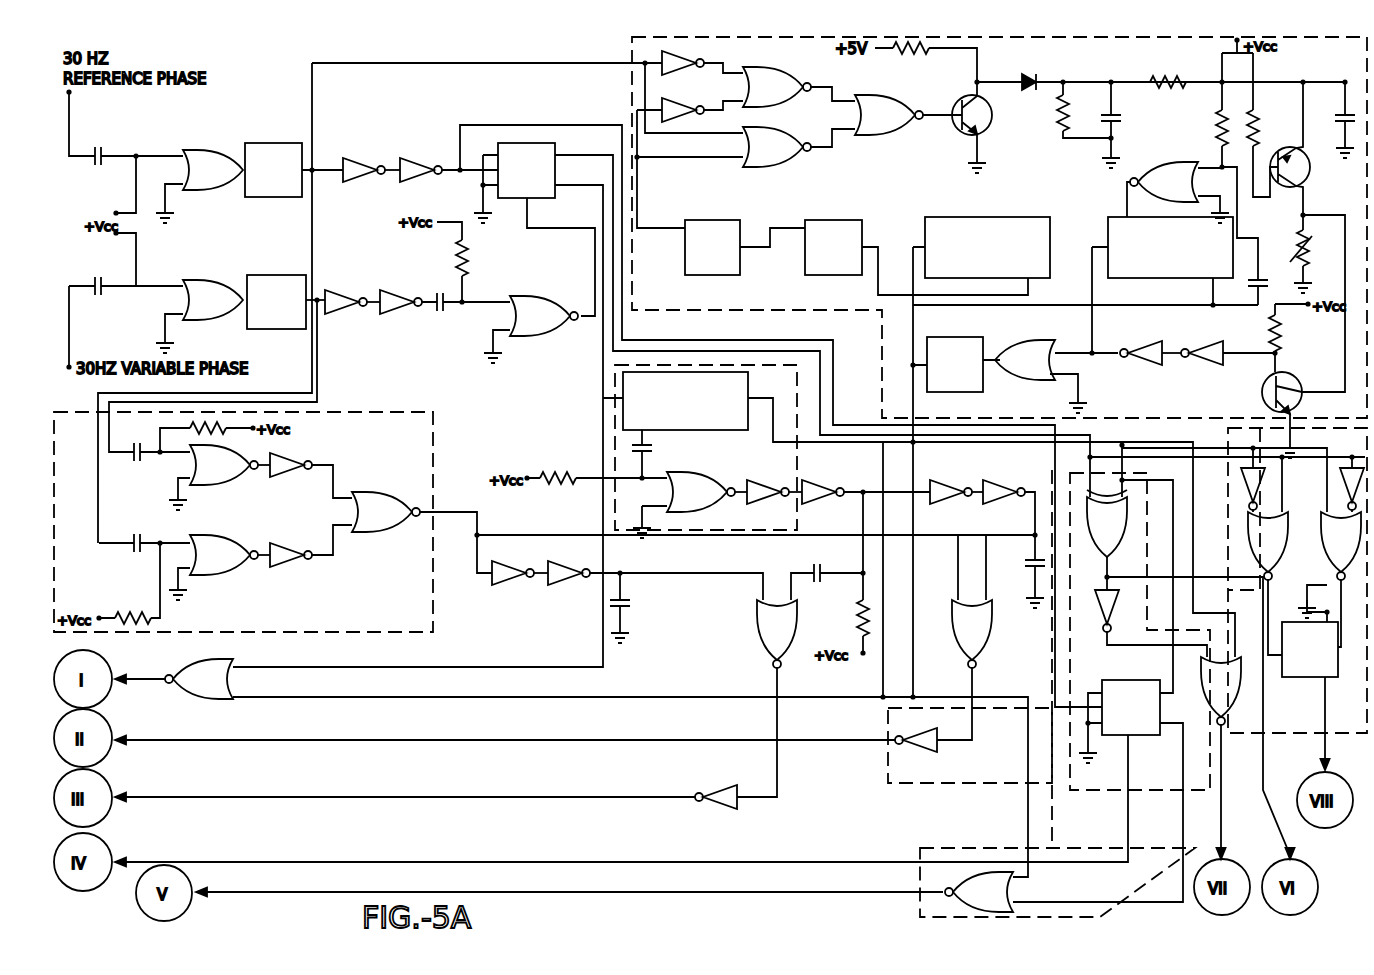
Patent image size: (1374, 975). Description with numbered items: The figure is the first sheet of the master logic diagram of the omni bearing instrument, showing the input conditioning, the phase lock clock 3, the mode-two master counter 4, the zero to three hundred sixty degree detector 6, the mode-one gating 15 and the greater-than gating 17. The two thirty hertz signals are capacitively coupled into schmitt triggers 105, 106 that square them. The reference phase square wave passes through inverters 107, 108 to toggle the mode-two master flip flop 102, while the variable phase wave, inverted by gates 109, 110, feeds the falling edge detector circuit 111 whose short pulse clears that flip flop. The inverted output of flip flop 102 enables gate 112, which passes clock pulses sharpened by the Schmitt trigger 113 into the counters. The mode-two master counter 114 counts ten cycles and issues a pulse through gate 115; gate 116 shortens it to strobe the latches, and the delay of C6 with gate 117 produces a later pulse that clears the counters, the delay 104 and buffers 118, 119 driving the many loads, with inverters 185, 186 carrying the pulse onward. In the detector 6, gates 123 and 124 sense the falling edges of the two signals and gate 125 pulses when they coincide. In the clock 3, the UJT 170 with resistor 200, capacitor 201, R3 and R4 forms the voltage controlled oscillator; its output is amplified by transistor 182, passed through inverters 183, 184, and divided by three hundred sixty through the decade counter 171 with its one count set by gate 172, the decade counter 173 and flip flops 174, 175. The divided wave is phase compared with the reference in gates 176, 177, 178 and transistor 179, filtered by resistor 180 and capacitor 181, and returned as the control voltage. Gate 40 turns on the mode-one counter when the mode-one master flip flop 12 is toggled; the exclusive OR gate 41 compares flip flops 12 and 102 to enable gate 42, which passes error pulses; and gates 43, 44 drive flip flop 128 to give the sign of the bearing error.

The phase lock clock 3 is at (632, 97).
The mode 2 master counter 4 is at (615, 420).
The 0°–360° detector 6 is at (437, 425).
The mode 1 master flip flop 12 is at (1104, 772).
The mode 1 gating 15 is at (1013, 846).
The gating to determine if A is greater than S 17 is at (1330, 715).
The gate 40 is at (979, 892).
The exclusive OR gate 41 is at (1107, 523).
The gate 42 is at (1221, 691).
The gate 43 is at (1341, 546).
The gate 44 is at (1268, 546).
The mode 2 master flip flop 102 is at (541, 199).
The delay 104 is at (990, 783).
The schmitt trigger 105 is at (272, 199).
The schmitt trigger 106 is at (276, 302).
The inverter 107 is at (368, 151).
The inverter 108 is at (425, 151).
The gate 109 is at (350, 283).
The gate 110 is at (405, 283).
The falling edge detector circuit 111 is at (544, 316).
The gate 112 is at (199, 679).
The Schmitt trigger 113 is at (955, 364).
The mode 2 master counter 114 is at (742, 434).
The gate 115 is at (701, 492).
The gate 116 is at (777, 634).
The gate 117 is at (972, 634).
The buffer gate 118 is at (928, 752).
The buffer gate 119 is at (726, 810).
The gate 123 is at (224, 465).
The gate 124 is at (224, 555).
The gate 125 is at (386, 512).
The flip flop 128 is at (1338, 672).
The UJT 170 is at (1302, 180).
The decade counter 171 is at (1106, 220).
The gate 172 is at (1164, 182).
The decade counter 173 is at (960, 216).
The flip flop 174 is at (848, 217).
The flip flop 175 is at (728, 217).
The phase comparator gate 176 is at (777, 87).
The phase comparator gate 177 is at (777, 147).
The phase comparator gate 178 is at (889, 115).
The phase comparator transistor 179 is at (990, 110).
The resistor 180 is at (1084, 108).
The capacitor 181 is at (1124, 128).
The amplifier transistor 182 is at (1290, 376).
The inverter 183 is at (1141, 364).
The inverter 184 is at (1202, 364).
The inverter 185 is at (768, 474).
The inverter 186 is at (825, 474).
The resistor 200 is at (1178, 74).
The capacitor 201 is at (1338, 116).
The resistor R3 is at (1264, 125).
The resistor R4 is at (1290, 254).
The capacitor C6 is at (1021, 562).